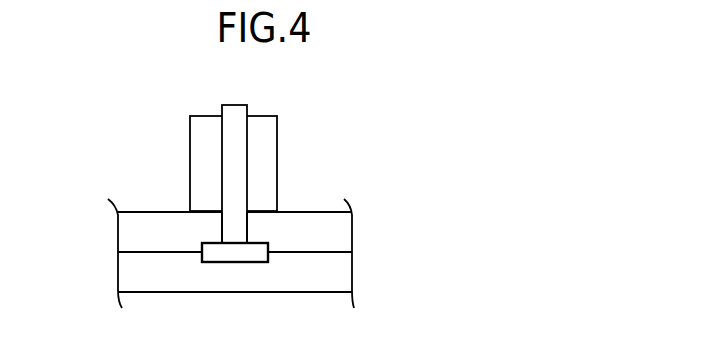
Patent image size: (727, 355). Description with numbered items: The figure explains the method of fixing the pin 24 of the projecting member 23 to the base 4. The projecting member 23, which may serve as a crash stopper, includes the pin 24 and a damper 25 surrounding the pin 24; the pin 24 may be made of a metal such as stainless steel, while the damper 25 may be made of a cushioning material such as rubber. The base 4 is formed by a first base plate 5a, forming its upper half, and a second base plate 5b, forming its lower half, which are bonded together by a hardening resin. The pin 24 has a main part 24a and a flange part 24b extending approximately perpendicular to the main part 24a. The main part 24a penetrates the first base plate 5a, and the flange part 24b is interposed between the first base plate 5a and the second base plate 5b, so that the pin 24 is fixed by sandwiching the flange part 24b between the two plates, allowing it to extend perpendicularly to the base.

The base 4 is at (284, 253).
The first base plate 5a is at (333, 233).
The second base plate 5b is at (333, 277).
The projecting member 23 is at (257, 218).
The pin 24 is at (232, 224).
The main part 24a is at (235, 187).
The flange part 24b is at (222, 250).
The damper 25 is at (262, 133).